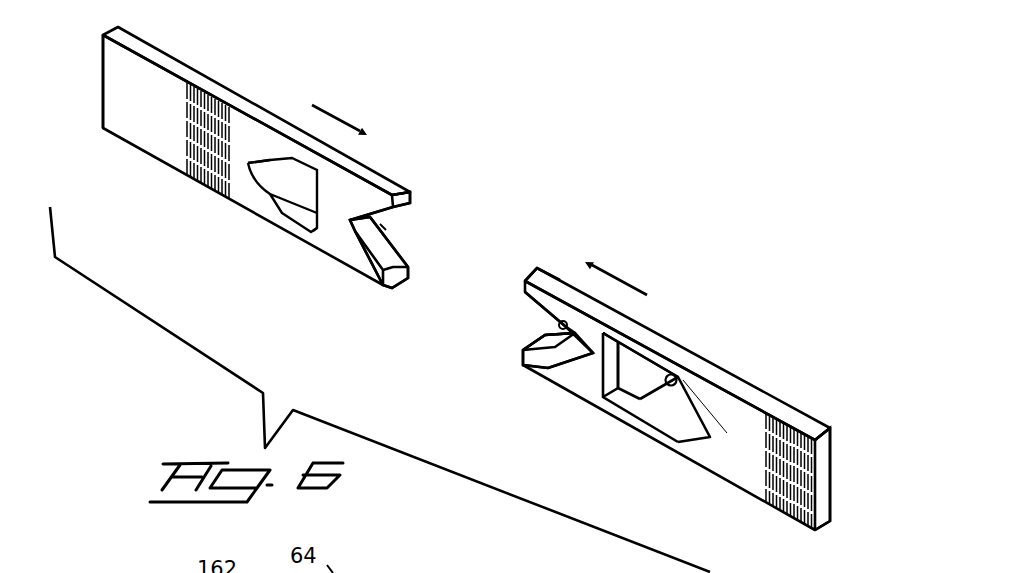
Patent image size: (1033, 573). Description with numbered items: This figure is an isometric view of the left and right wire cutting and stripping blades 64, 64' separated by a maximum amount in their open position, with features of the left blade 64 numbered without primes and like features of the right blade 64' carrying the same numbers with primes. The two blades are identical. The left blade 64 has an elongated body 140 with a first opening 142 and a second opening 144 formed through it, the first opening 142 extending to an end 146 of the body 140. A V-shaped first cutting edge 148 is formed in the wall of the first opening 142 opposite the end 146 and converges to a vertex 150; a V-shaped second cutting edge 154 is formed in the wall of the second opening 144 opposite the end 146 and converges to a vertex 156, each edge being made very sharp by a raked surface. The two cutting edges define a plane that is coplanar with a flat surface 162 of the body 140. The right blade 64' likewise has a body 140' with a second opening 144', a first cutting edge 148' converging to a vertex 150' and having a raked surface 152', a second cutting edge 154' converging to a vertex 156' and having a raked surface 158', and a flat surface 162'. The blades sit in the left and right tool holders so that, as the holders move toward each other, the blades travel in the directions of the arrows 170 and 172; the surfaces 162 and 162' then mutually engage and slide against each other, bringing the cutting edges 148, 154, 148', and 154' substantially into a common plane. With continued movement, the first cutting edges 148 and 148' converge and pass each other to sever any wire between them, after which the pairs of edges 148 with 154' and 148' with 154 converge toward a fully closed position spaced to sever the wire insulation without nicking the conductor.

The left wire cutting and stripping blade 64 is at (256, 148).
The right wire cutting and stripping blade 64' is at (684, 352).
The elongated body 140 is at (72, 102).
The elongated body 140' is at (855, 482).
The first opening 142 is at (384, 226).
The second opening 144 is at (294, 146).
The second opening 144' is at (701, 339).
The end of the body 146 is at (409, 201).
The first cutting edge 148 is at (418, 231).
The first cutting edge 148' is at (622, 298).
The vertex 150 is at (328, 263).
The vertex 150' is at (557, 391).
The raked surface 152' is at (623, 401).
The second cutting edge 154 is at (262, 101).
The second cutting edge 154' is at (705, 355).
The vertex 156 is at (247, 221).
The vertex 156' is at (666, 450).
The raked surface 158' is at (716, 464).
The flat surface 162 is at (134, 116).
The flat surface 162' is at (831, 440).
The arrow 170 is at (340, 110).
The arrow 172 is at (618, 281).